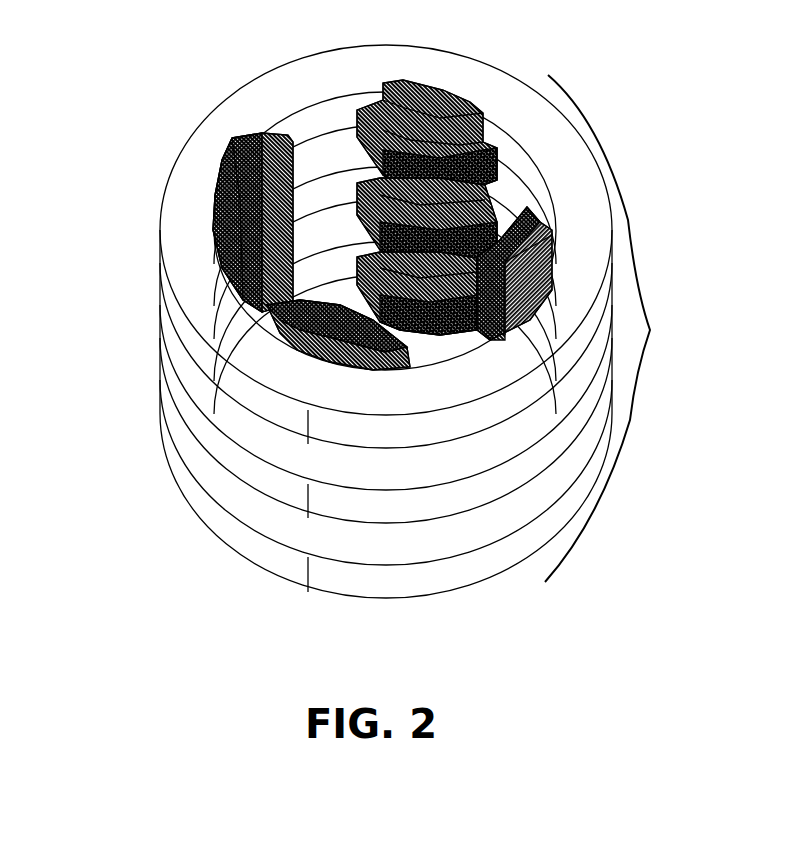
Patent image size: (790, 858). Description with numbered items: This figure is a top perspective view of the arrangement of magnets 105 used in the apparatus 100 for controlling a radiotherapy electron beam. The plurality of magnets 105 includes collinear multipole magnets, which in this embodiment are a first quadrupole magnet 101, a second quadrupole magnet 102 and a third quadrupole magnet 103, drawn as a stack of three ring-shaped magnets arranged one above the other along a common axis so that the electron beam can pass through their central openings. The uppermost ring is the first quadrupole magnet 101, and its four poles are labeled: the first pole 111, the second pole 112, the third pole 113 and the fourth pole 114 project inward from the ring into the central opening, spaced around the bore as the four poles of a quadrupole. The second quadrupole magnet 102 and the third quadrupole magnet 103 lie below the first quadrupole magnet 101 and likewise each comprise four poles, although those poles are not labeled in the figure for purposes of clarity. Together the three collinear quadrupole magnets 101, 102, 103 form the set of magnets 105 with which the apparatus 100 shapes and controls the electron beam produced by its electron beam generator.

The apparatus 100 is at (124, 31).
The first quadrupole magnet 101 is at (160, 182).
The second quadrupole magnet 102 is at (163, 353).
The third quadrupole magnet 103 is at (175, 471).
The plurality of magnets 105 is at (627, 328).
The first pole 111 is at (238, 165).
The second pole 112 is at (406, 80).
The third pole 113 is at (525, 297).
The fourth pole 114 is at (297, 338).